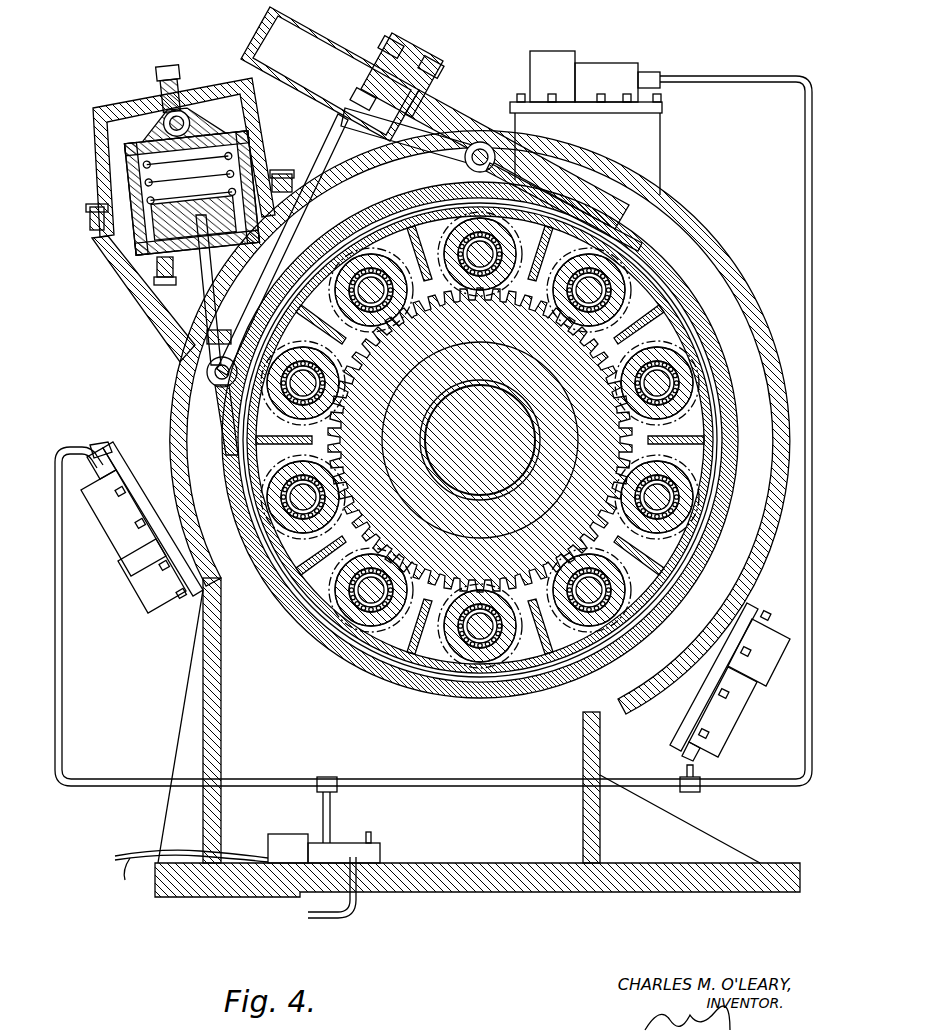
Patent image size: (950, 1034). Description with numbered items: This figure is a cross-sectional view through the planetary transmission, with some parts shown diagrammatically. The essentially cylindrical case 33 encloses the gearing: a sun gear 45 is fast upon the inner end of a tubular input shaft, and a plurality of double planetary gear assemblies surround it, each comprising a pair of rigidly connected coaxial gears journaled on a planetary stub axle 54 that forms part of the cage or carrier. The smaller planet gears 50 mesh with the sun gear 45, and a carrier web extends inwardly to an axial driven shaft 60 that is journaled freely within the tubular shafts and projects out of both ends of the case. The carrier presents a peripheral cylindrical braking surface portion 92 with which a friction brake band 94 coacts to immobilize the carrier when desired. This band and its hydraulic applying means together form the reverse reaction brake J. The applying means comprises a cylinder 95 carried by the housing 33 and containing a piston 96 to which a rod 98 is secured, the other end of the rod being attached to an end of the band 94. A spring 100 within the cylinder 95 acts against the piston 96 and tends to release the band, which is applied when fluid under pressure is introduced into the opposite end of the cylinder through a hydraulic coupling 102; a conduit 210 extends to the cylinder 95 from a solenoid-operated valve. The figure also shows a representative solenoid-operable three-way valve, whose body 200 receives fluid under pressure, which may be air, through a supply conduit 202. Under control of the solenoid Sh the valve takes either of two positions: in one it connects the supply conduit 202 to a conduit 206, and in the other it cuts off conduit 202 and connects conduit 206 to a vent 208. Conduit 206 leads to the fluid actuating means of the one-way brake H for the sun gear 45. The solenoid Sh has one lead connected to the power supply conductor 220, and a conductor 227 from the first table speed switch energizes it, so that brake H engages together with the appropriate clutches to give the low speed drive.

The case 33 is at (728, 265).
The friction brake band 94 is at (610, 228).
The planet gear 50 is at (393, 225).
The peripheral cylindrical braking surface portion 92 is at (357, 246).
The sun gear 45 is at (403, 450).
The driven shaft 60 is at (538, 438).
The planetary stub axle 54 is at (487, 225).
The reverse reaction brake J is at (150, 118).
The spring 100 is at (242, 165).
The cylinder 95 is at (150, 162).
The piston 96 is at (233, 200).
The hydraulic coupling 102 is at (168, 283).
The conduit 210 is at (205, 302).
The rod 98 is at (208, 358).
The one-way brake H is at (606, 56).
The conduit 206 is at (330, 812).
The solenoid Sh is at (283, 835).
The switch box 200 is at (373, 855).
The vent 208 is at (373, 838).
The conduit 202 is at (357, 910).
The conductor 227 is at (120, 856).
The power supply conductor 220 is at (124, 864).